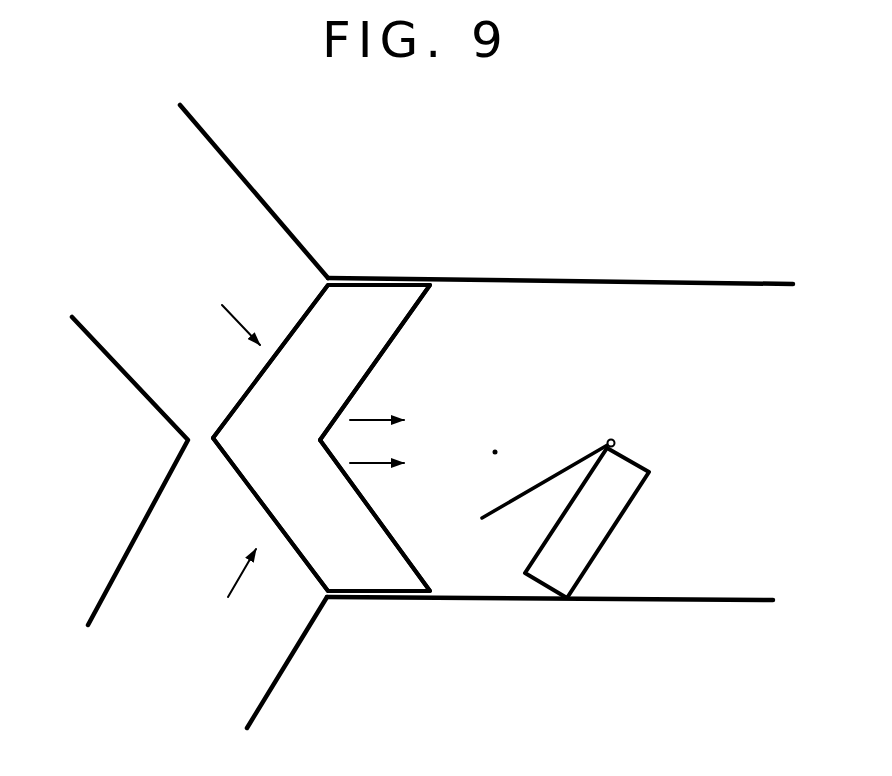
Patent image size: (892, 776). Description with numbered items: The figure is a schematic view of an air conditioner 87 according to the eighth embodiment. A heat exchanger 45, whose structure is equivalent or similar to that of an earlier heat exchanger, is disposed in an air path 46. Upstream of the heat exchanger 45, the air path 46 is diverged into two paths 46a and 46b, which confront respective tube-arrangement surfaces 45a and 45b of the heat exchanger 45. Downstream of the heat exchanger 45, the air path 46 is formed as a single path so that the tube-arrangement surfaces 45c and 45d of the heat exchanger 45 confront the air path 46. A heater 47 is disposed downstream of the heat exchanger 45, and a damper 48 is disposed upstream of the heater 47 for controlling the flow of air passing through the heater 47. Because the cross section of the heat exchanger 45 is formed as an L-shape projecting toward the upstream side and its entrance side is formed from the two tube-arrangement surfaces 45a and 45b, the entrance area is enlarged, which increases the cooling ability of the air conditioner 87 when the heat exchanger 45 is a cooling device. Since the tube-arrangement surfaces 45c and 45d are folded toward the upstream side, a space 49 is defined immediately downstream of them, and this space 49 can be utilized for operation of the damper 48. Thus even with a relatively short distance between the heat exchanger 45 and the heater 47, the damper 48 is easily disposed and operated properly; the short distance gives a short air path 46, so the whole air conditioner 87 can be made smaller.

The heat exchanger 45 is at (377, 573).
The tube-arrangement surface 45a is at (250, 385).
The tube-arrangement surface 45b is at (292, 549).
The tube-arrangement surface 45c is at (391, 351).
The tube-arrangement surface 45d is at (389, 522).
The air path 46 is at (690, 383).
The diverged air path 46a is at (270, 233).
The diverged air path 46b is at (263, 668).
The heater 47 is at (587, 540).
The damper 48 is at (565, 468).
The space 49 is at (495, 452).
The air conditioner 87 is at (633, 266).